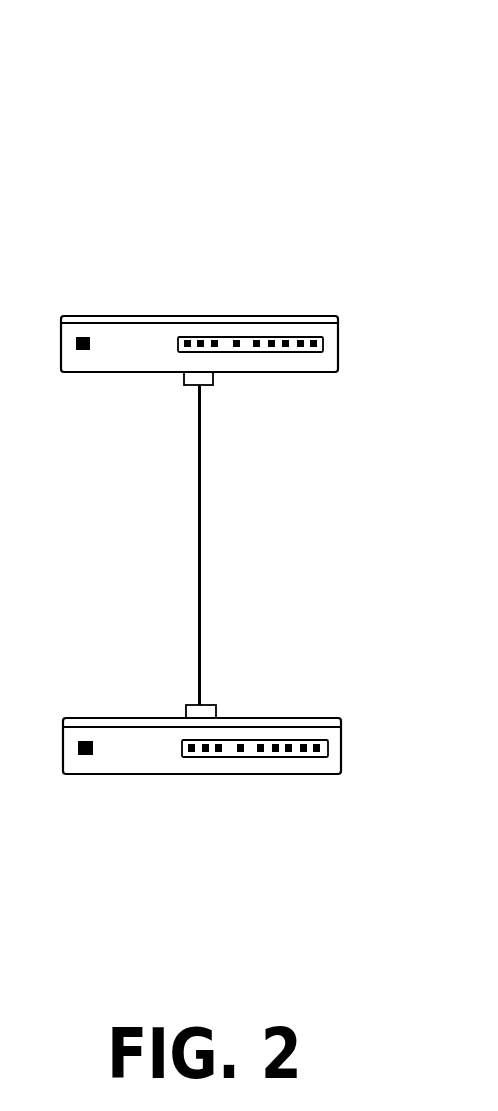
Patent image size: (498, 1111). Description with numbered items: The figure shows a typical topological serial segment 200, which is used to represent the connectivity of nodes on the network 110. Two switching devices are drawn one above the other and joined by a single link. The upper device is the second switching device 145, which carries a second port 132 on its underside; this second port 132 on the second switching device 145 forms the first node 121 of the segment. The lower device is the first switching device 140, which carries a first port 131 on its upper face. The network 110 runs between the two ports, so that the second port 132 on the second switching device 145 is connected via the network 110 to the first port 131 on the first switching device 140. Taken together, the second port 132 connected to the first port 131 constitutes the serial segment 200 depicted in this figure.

The topological serial segment 200 is at (196, 98).
The second switching device 145 is at (226, 316).
The second port 132 is at (192, 386).
The network 110 is at (201, 622).
The first node 121 is at (240, 392).
The first port 131 is at (194, 704).
The first switching device 140 is at (242, 775).